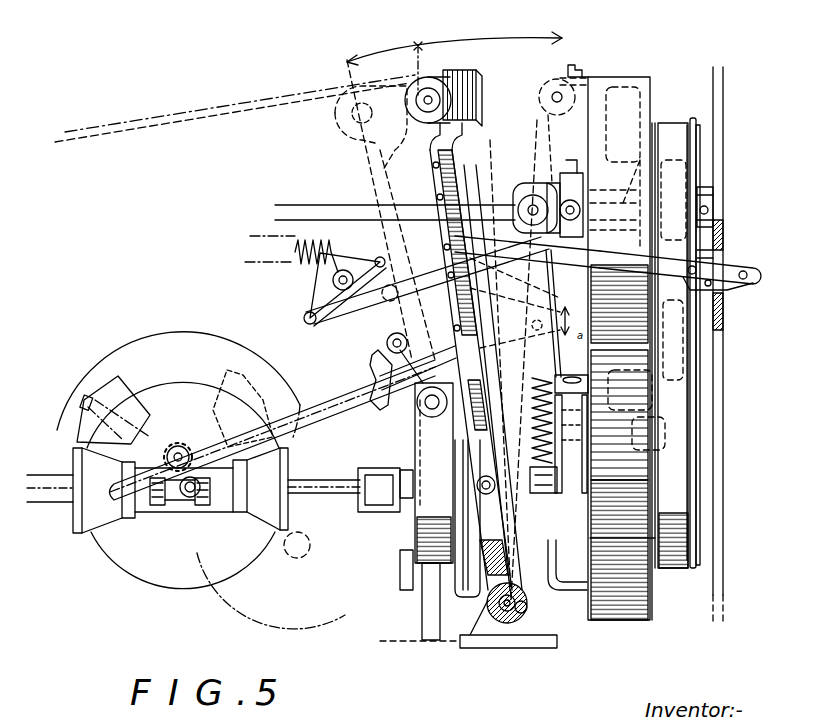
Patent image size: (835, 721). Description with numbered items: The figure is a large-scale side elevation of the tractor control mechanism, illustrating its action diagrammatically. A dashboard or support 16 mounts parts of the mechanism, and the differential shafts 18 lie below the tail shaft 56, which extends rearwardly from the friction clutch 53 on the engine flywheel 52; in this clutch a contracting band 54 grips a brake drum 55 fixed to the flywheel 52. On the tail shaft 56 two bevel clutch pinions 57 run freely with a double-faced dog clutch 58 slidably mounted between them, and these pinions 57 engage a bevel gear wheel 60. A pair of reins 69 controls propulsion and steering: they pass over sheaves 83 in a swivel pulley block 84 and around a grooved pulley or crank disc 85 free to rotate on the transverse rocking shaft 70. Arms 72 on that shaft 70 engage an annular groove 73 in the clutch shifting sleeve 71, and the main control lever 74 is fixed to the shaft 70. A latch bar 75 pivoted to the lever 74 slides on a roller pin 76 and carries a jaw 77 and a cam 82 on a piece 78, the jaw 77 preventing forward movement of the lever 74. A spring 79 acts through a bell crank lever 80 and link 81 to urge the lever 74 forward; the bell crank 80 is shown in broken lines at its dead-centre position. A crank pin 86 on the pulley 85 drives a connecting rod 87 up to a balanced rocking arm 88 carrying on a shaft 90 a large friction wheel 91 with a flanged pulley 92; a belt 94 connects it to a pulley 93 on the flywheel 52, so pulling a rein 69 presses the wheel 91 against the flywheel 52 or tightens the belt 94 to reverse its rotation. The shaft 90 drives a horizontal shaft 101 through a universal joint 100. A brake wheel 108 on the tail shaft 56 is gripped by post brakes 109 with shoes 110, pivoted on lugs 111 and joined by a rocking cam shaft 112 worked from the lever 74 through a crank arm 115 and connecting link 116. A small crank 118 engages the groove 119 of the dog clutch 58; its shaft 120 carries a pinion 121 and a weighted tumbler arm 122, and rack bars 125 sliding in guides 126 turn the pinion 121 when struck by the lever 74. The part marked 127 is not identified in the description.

The support or dashboard 16 is at (724, 118).
The differential shafts 18 is at (283, 548).
The flywheel 52 is at (648, 598).
The friction clutch 53 is at (570, 430).
The contracting band 54 is at (655, 538).
The brake drum 55 is at (590, 582).
The tail shaft 56 is at (40, 477).
The bevel clutch pinions 57 is at (180, 490).
The double-faced dog clutch 58 is at (172, 510).
The bevel gear wheel 60 is at (160, 568).
The reins 69 is at (163, 126).
The transverse rocking shaft 70 is at (510, 624).
The clutch shifting sleeve 71 is at (487, 582).
The upwardly extending arms 72 is at (495, 613).
The annular groove 73 is at (492, 420).
The main control lever 74 is at (430, 178).
The latch bar 75 is at (455, 240).
The catch or pin 76 is at (745, 262).
The jaw or notch 77 is at (735, 270).
The piece 78 is at (757, 283).
The spring 79 is at (292, 262).
The bell crank lever 80 is at (325, 290).
The link 81 is at (390, 290).
The cam 82 is at (730, 292).
The sheaves 83 is at (455, 105).
The swivel pulley block 84 is at (478, 80).
The grooved pulley or crank disc 85 is at (490, 625).
The crank pin 86 is at (530, 592).
The connecting rod 87 is at (540, 382).
The balanced rocking arm 88 is at (575, 185).
The shaft 90 is at (665, 150).
The friction wheel 91 is at (625, 82).
The flanged belt pulley 92 is at (698, 160).
The pulley 93 is at (698, 467).
The belt 94 is at (666, 371).
The universal joint 100 is at (530, 193).
The horizontal shaft 101 is at (347, 207).
The brake wheel 108 is at (413, 542).
The vertical post brakes 109 is at (440, 560).
The shoes 110 is at (373, 442).
The lugs 111 is at (437, 605).
The rocking cam shaft 112 is at (440, 490).
The crank arm 115 is at (385, 350).
The connecting link 116 is at (427, 337).
The small crank 118 is at (147, 507).
The annular groove 119 is at (195, 512).
The shaft 120 is at (178, 443).
The toothed pinion 121 is at (82, 442).
The weighted tumbler arm 122 is at (103, 397).
The rack bars 125 is at (298, 381).
The guides 126 is at (385, 392).
The hook 127 is at (372, 398).